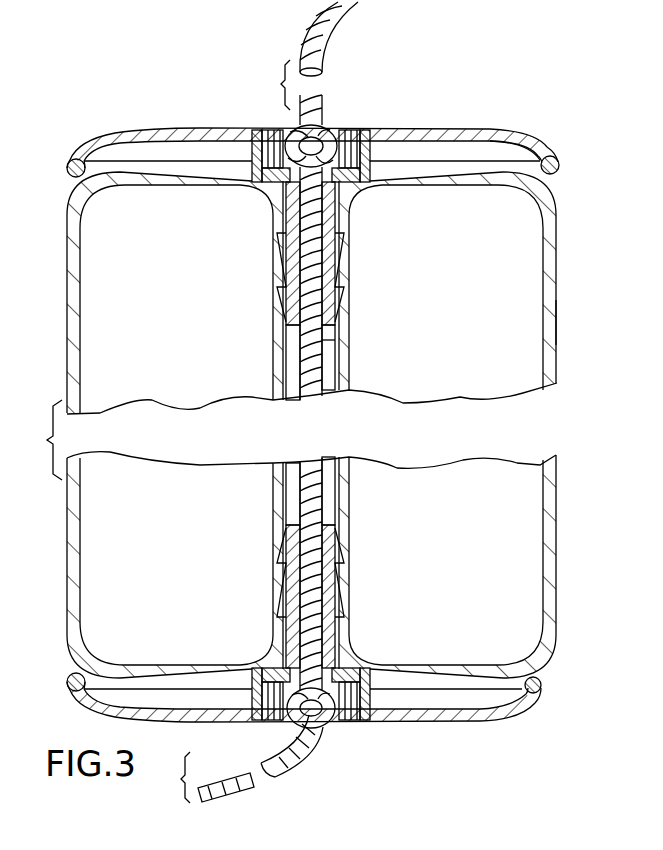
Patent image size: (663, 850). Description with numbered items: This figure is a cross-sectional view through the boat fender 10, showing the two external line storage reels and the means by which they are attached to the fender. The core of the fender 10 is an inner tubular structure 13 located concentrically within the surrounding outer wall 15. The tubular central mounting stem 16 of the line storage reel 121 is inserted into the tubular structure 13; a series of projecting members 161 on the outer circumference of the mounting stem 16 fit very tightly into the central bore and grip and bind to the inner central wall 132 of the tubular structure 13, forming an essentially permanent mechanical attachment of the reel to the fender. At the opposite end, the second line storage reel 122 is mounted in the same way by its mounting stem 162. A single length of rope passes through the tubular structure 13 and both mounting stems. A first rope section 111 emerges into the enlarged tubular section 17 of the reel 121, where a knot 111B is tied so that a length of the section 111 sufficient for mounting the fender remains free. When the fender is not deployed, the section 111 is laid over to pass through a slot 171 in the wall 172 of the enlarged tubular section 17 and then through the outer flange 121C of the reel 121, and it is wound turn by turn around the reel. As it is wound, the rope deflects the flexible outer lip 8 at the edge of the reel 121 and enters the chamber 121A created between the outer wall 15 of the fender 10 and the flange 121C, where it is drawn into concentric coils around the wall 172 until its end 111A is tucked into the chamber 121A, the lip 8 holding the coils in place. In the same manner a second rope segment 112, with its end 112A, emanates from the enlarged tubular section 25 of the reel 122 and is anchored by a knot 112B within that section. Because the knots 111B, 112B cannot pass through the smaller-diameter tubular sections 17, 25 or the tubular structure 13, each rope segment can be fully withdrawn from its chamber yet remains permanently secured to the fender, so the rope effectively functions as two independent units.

The flexible outer lip 8 is at (557, 173).
The boat fender 10 is at (560, 273).
The outer wall 15 is at (557, 328).
The inner tubular structure 13 is at (346, 409).
The inner central wall 132 is at (342, 350).
The tubular central mounting stem 16 is at (341, 425).
The projecting members 161 is at (346, 238).
The mounting stem 162 is at (344, 580).
The enlarged tubular section 17 is at (298, 136).
The slot 171 is at (283, 130).
The wall 172 is at (232, 152).
The enlarged tubular section 25 is at (250, 702).
The rope section 111 is at (318, 98).
The end of rope section 111A is at (352, 20).
The knot 111B is at (330, 128).
The second rope segment 112 is at (302, 767).
The end of rope 112A is at (228, 797).
The knot 112B is at (332, 727).
The line storage reel 121 is at (447, 130).
The chamber 121A is at (478, 152).
The outer flange 121C is at (112, 133).
The line storage reel 122 is at (524, 714).